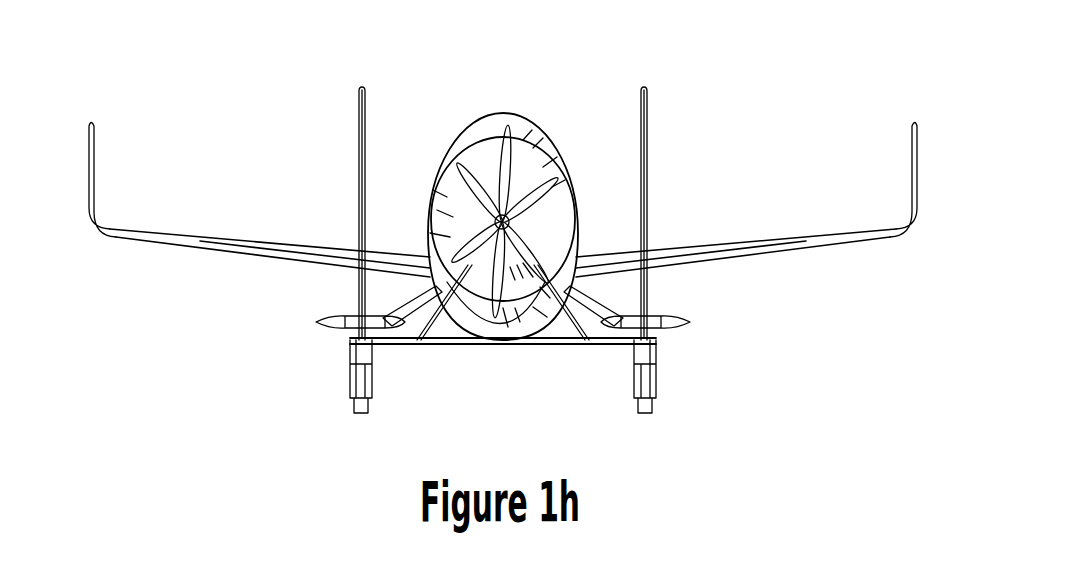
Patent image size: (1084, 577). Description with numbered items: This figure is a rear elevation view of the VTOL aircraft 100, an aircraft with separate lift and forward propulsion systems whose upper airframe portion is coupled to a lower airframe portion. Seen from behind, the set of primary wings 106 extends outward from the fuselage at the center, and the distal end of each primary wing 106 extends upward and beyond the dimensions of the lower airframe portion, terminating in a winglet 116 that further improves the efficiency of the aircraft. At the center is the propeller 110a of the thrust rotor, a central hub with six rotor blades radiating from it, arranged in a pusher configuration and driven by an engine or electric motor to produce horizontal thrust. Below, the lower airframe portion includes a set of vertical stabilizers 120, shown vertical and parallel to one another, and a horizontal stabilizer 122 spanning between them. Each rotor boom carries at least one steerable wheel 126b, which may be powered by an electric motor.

The VTOL aircraft 100 is at (171, 32).
The primary wing 106 is at (259, 249).
The propeller 110a is at (561, 178).
The winglet 116 is at (88, 170).
The vertical stabilizer 120 is at (361, 80).
The horizontal stabilizer 122 is at (439, 349).
The steerable wheel 126b is at (358, 420).